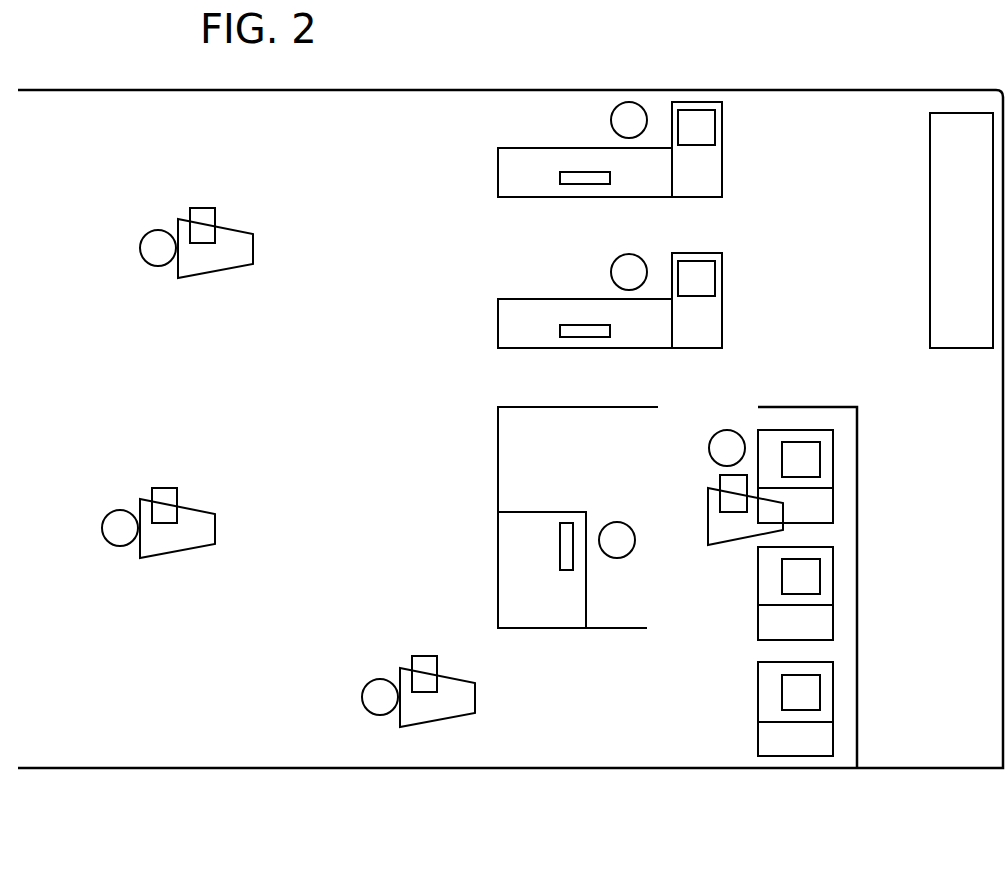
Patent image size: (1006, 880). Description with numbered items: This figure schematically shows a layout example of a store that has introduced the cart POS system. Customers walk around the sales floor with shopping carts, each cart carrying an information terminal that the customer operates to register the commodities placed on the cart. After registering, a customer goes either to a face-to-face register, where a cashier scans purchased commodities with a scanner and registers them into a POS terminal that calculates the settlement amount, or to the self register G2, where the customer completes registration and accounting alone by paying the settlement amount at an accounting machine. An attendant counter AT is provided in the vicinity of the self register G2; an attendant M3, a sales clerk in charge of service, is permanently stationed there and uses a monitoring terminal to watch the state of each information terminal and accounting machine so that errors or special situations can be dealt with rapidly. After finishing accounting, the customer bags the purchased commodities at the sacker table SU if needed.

The attendant M3 is at (612, 523).
The self register G2 is at (807, 405).
The attendant counter AT is at (535, 513).
The sacker table SU is at (928, 152).